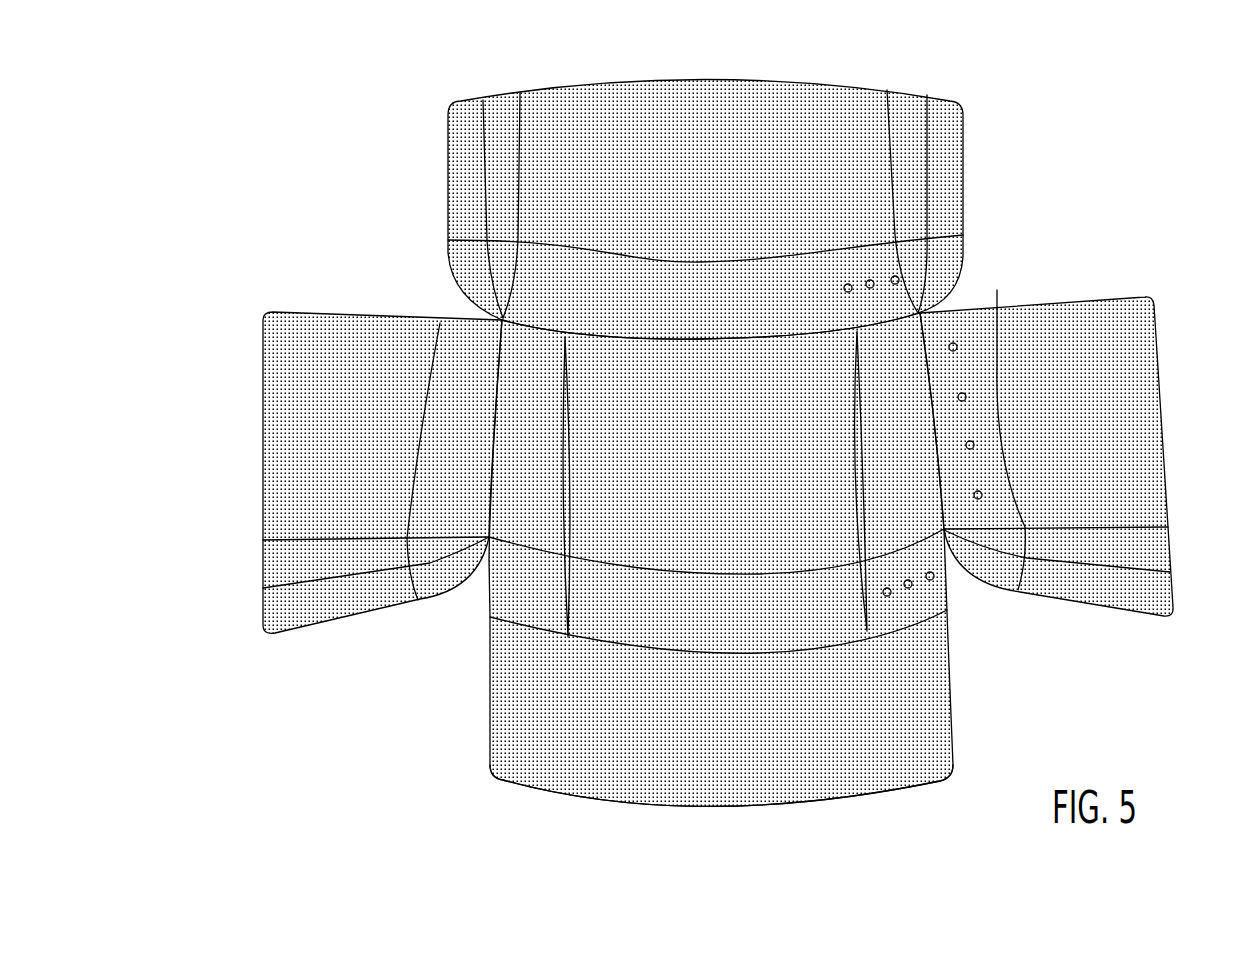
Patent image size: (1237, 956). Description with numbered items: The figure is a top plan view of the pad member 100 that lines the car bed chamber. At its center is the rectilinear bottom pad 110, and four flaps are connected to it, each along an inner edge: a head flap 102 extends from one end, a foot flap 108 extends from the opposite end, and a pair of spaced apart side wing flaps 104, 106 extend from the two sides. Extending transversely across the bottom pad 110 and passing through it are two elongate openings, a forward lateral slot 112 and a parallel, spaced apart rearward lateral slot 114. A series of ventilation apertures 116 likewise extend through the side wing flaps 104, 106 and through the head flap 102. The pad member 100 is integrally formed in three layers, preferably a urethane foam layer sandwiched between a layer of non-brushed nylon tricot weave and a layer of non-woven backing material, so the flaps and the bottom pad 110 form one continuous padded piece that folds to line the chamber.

The pad member 100 is at (1162, 647).
The head flap 102 is at (1132, 337).
The side wing flap 104 is at (692, 173).
The side wing flap 106 is at (712, 762).
The foot flap 108 is at (310, 467).
The bottom pad 110 is at (687, 540).
The forward lateral slot 112 is at (868, 594).
The rearward lateral slot 114 is at (567, 600).
The ventilation apertures 116 is at (848, 284).